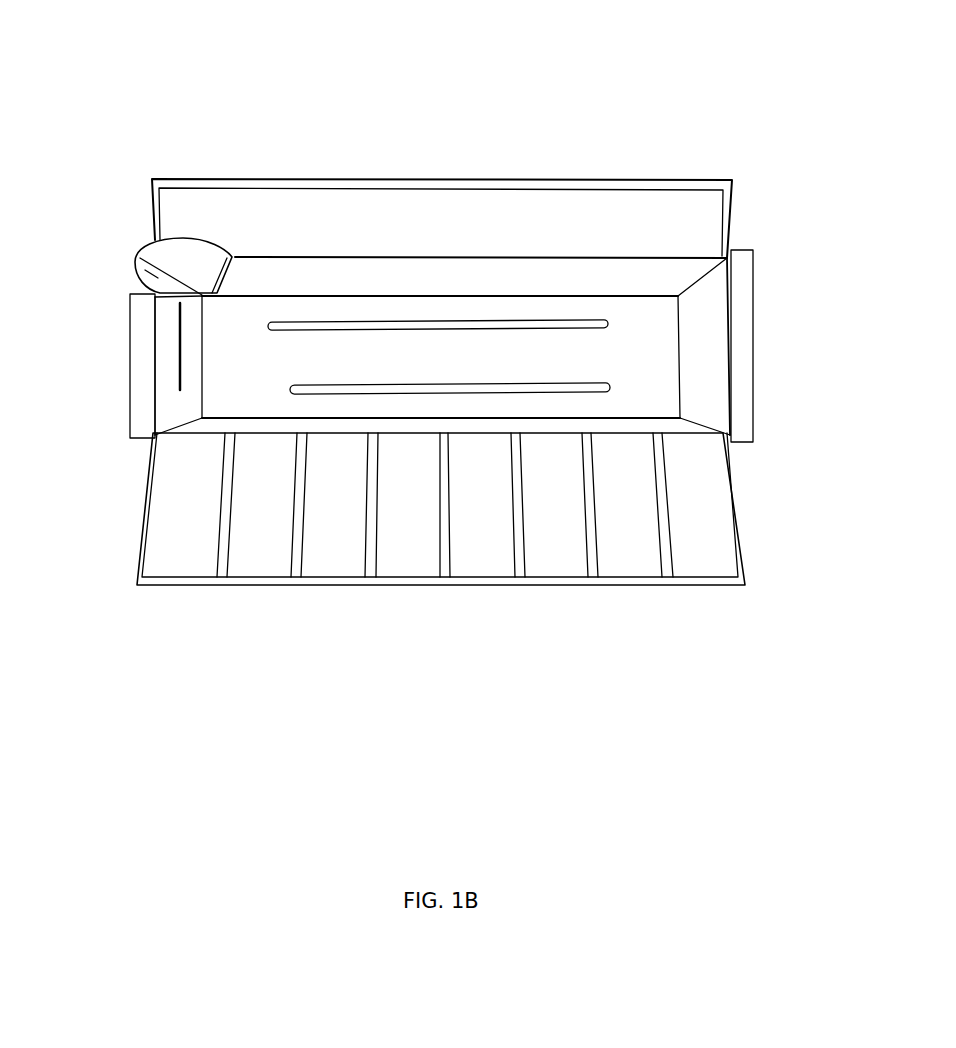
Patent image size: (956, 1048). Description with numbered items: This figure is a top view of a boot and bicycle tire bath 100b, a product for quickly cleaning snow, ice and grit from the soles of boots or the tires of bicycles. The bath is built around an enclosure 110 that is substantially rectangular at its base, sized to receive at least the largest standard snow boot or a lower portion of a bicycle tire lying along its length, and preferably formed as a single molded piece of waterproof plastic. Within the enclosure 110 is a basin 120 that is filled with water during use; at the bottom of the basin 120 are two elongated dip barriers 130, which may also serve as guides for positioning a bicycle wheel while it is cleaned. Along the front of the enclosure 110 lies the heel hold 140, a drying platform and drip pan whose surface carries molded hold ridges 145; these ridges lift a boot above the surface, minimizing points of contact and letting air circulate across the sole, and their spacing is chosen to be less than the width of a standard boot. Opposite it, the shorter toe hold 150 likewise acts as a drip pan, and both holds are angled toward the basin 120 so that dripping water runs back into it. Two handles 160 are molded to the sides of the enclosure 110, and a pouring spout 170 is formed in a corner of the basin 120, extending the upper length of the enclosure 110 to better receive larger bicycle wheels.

The bath 100b is at (484, 89).
The enclosure 110 is at (713, 325).
The basin 120 is at (582, 293).
The dip barriers 130 is at (507, 325).
The heel hold 140 is at (332, 548).
The hold ridges 145 is at (517, 552).
The toe hold 150 is at (489, 228).
The handles 160 is at (142, 397).
The pouring spout 170 is at (140, 259).